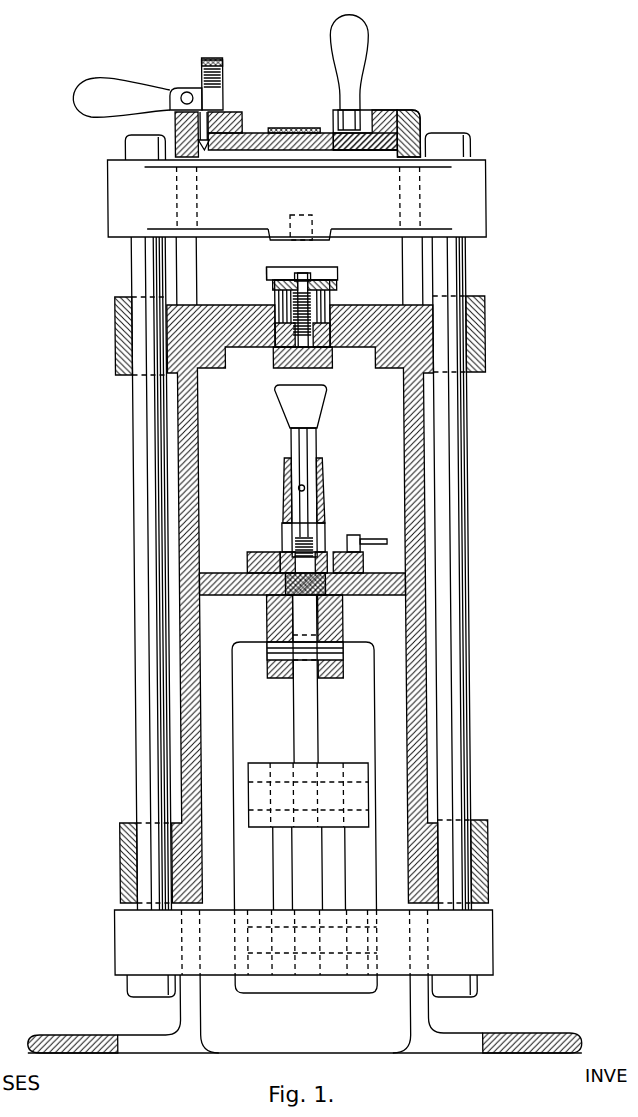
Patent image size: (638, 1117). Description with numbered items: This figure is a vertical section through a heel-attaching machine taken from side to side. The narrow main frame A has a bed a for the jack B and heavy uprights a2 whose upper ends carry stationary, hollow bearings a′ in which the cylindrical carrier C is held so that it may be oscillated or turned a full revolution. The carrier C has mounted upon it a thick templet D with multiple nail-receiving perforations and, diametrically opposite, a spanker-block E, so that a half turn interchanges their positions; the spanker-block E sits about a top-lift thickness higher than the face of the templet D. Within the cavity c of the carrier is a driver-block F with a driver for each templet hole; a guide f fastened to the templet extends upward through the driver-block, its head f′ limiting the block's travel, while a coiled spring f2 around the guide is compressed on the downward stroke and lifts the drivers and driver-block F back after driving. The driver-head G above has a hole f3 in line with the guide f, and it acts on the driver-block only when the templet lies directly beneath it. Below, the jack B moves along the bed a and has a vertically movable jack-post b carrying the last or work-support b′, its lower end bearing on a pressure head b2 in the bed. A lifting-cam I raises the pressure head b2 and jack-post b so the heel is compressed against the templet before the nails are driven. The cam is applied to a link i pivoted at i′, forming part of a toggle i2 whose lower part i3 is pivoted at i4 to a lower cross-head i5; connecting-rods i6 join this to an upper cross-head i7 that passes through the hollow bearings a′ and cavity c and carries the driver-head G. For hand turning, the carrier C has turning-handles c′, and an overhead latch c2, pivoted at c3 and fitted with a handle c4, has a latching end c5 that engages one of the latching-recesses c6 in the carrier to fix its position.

The main frame A is at (418, 508).
The bed a is at (378, 573).
The stationary bearings a′ is at (416, 130).
The uprights a2 is at (419, 402).
The jack B is at (318, 485).
The jack-post b is at (308, 445).
The last or work-support b′ is at (310, 408).
The pressure head or block b2 is at (328, 587).
The carrier C is at (235, 296).
The cavity c is at (400, 270).
The turning-handles c′ is at (365, 47).
The overhead latch c2 is at (241, 118).
The pivot c3 is at (186, 92).
The handle c4 is at (121, 88).
The latching end c5 is at (198, 148).
The latching-recesses c6 is at (207, 150).
The templet D is at (330, 338).
The spanker-block E is at (289, 129).
The driver-block F is at (329, 278).
The guide f is at (315, 300).
The head f′ is at (306, 277).
The coiled spring f2 is at (265, 270).
The hole f3 is at (288, 217).
The driver-head G is at (278, 241).
The lifting-cam I is at (281, 600).
The link i is at (306, 707).
The pivot i′ is at (339, 653).
The toggle i2 is at (275, 770).
The lower part of toggle i3 is at (275, 860).
The pivot i4 is at (300, 924).
The lower cross-head i5 is at (303, 942).
The connecting-rods i6 is at (472, 652).
The upper cross-head i7 is at (296, 198).